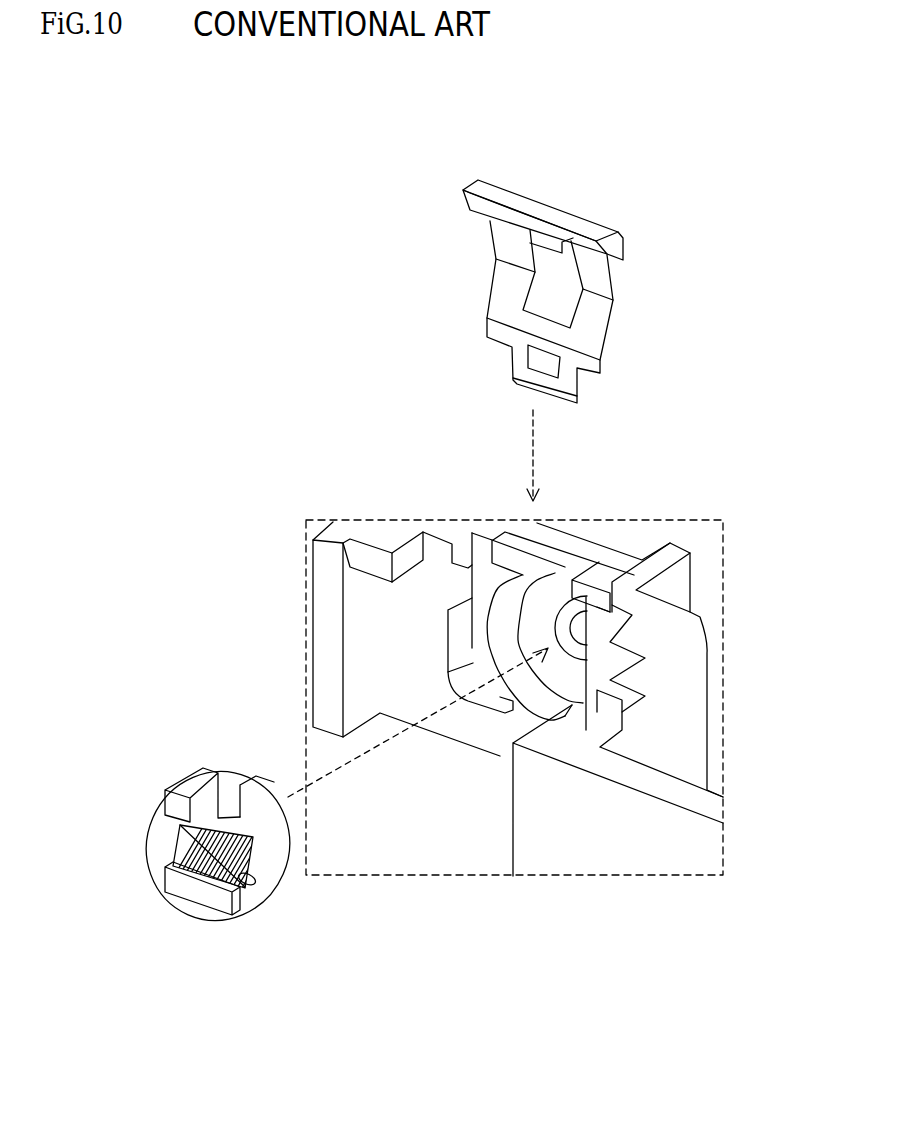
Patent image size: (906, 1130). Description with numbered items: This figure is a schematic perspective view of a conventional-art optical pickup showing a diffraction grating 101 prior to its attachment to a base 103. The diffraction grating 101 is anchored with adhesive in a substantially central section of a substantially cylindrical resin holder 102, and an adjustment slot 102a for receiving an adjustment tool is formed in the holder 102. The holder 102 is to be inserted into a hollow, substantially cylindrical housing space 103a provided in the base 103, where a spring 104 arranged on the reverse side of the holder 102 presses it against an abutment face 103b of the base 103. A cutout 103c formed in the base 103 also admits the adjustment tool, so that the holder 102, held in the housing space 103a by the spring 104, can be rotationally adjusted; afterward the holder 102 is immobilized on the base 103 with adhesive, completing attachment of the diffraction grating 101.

The diffraction grating 101 is at (222, 870).
The holder 102 is at (205, 821).
The adjustment slot 102a is at (220, 790).
The base 103 is at (501, 670).
The housing space 103a is at (513, 643).
The abutment face 103b is at (578, 673).
The cutout 103c is at (567, 562).
The spring 104 is at (598, 324).